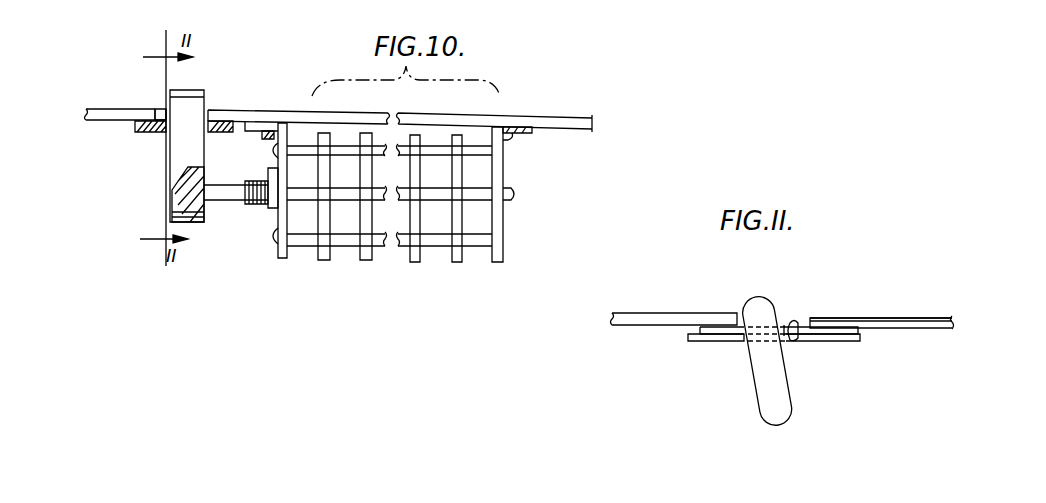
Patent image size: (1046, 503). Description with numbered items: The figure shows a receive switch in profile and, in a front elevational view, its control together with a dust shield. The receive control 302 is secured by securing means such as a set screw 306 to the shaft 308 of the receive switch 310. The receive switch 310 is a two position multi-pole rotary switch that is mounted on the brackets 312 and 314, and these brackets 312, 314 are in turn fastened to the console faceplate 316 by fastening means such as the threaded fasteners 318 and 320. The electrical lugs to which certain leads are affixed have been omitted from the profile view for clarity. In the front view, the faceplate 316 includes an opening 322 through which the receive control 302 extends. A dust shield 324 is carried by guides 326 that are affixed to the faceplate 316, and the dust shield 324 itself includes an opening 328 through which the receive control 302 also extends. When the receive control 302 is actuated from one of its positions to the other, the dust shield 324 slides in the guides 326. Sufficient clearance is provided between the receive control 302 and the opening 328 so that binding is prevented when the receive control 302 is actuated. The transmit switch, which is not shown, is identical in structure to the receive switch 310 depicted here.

In FIG. 10, the receive control 302 is at (190, 90).
In FIG. 11, the receive control 302 is at (750, 297).
In FIG. 10, the set screw 306 is at (190, 215).
In FIG. 10, the shaft 308 is at (228, 195).
In FIG. 10, the receive switch 310 is at (444, 280).
In FIG. 10, the bracket 312 is at (290, 258).
In FIG. 10, the bracket 314 is at (498, 263).
In FIG. 10, the console faceplate 316 is at (550, 118).
In FIG. 11, the console faceplate 316 is at (917, 318).
In FIG. 10, the threaded fastener 318 is at (258, 138).
In FIG. 10, the threaded fastener 320 is at (522, 139).
In FIG. 11, the opening 322 is at (811, 319).
In FIG. 10, the dust shield 324 is at (158, 112).
In FIG. 11, the dust shield 324 is at (795, 338).
In FIG. 10, the guides 326 is at (224, 121).
In FIG. 11, the guides 326 is at (848, 341).
In FIG. 11, the opening 328 is at (786, 322).